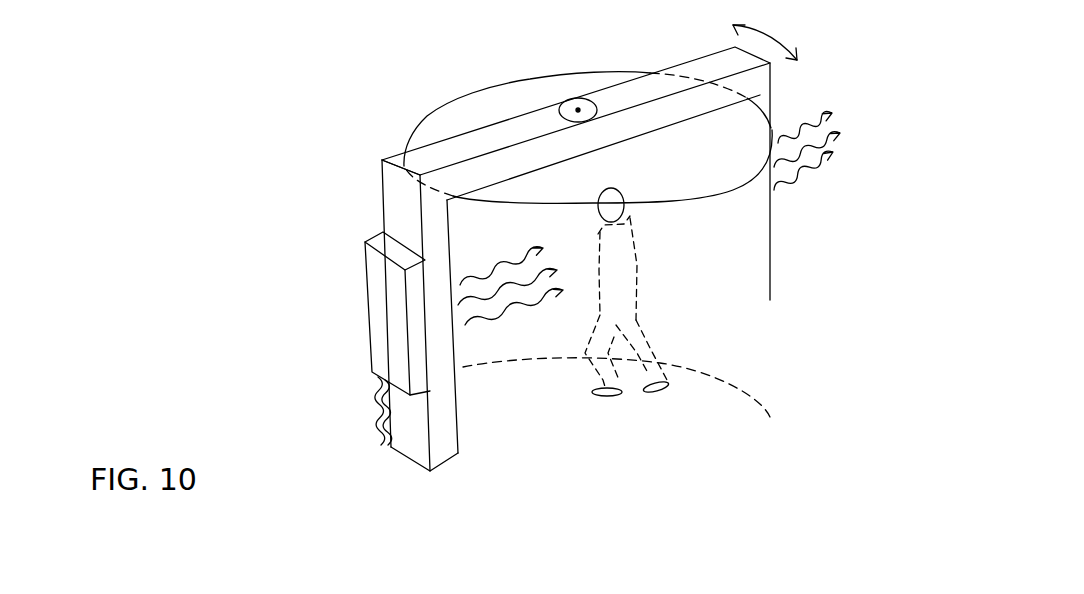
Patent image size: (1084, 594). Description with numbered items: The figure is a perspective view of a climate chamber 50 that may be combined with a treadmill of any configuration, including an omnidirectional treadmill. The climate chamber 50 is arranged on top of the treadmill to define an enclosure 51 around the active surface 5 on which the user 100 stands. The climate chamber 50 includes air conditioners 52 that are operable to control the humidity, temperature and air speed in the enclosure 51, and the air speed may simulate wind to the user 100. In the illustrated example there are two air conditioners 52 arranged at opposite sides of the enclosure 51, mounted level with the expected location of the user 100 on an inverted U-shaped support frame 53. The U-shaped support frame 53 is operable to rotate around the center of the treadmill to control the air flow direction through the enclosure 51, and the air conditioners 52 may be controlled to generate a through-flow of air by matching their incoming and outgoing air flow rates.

The climate chamber 50 is at (350, 200).
The inverted U-shaped support frame 53 is at (442, 157).
The enclosure 51 is at (772, 290).
The air conditioner 52 is at (380, 336).
The active surface 5 is at (645, 435).
The user 100 is at (616, 262).